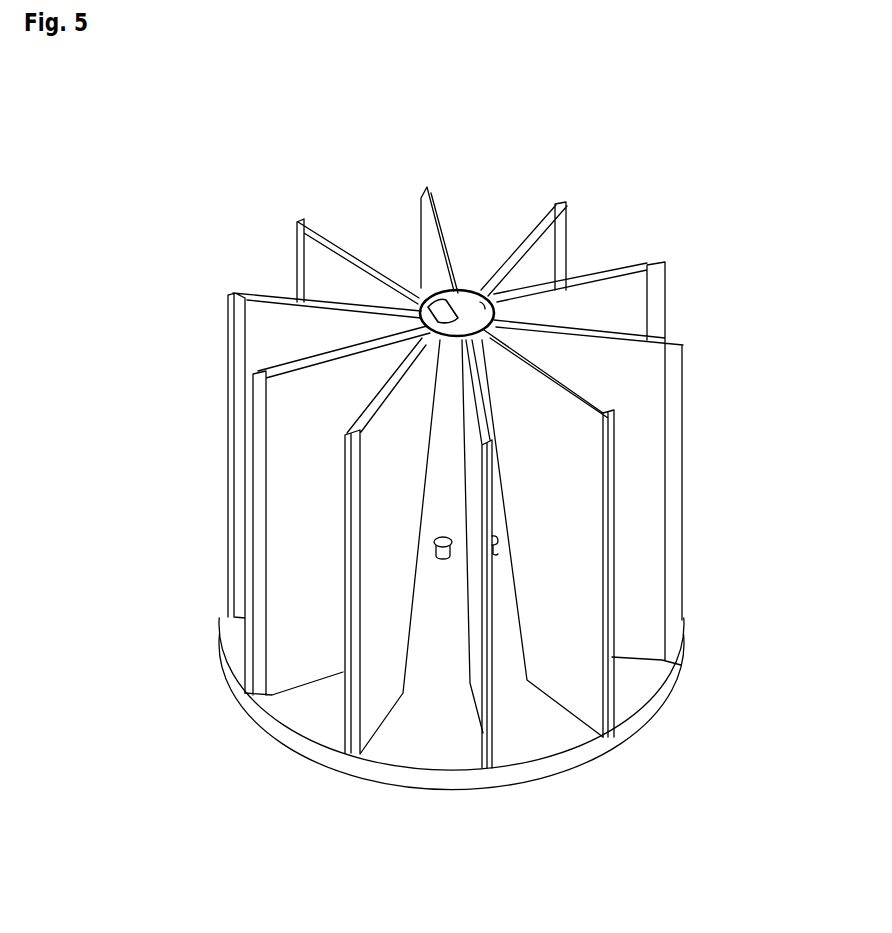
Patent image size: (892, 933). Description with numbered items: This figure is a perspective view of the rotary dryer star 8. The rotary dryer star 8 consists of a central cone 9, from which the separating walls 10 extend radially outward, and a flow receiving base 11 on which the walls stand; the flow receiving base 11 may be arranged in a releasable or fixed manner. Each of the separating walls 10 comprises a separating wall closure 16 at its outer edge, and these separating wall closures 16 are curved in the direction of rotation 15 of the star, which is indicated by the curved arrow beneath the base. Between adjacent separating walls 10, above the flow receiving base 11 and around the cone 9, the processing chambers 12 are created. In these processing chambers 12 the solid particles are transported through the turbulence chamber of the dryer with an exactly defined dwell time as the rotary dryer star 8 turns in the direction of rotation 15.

The rotary dryer star 8 is at (103, 100).
The cone 9 is at (460, 298).
The separating walls 10 is at (320, 262).
The flow receiving base 11 is at (638, 685).
The processing chambers 12 is at (317, 686).
The direction of rotation 15 is at (663, 733).
The separating wall closures 16 is at (667, 264).